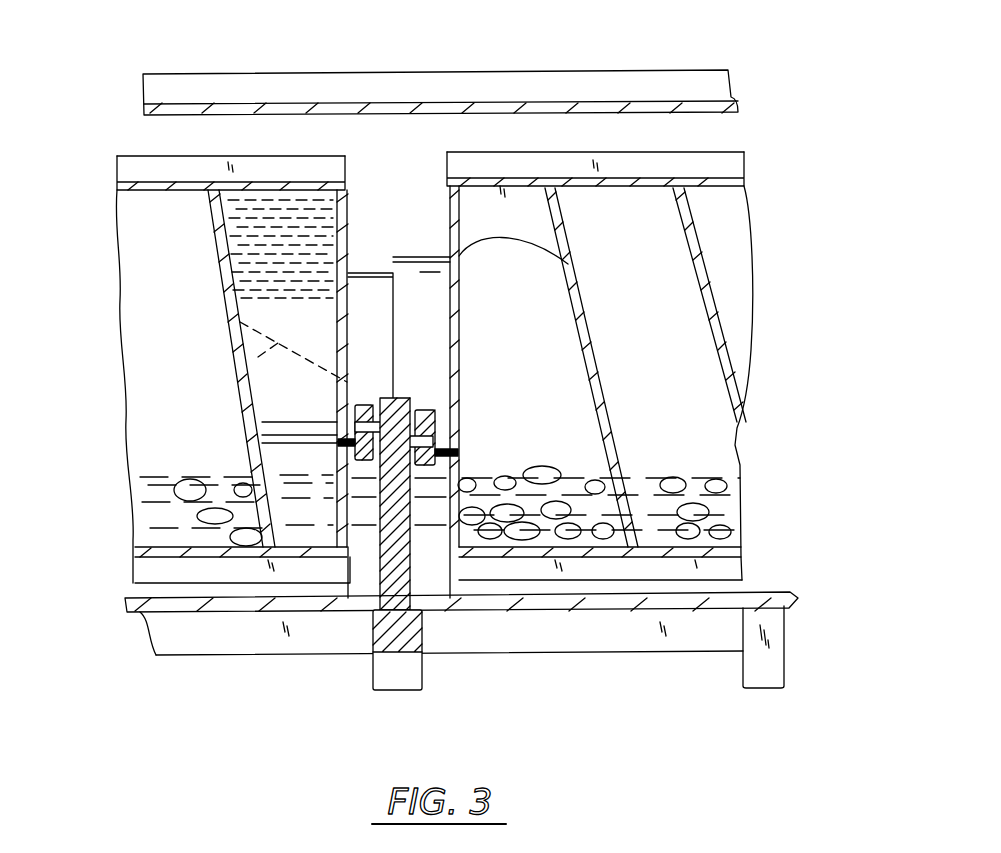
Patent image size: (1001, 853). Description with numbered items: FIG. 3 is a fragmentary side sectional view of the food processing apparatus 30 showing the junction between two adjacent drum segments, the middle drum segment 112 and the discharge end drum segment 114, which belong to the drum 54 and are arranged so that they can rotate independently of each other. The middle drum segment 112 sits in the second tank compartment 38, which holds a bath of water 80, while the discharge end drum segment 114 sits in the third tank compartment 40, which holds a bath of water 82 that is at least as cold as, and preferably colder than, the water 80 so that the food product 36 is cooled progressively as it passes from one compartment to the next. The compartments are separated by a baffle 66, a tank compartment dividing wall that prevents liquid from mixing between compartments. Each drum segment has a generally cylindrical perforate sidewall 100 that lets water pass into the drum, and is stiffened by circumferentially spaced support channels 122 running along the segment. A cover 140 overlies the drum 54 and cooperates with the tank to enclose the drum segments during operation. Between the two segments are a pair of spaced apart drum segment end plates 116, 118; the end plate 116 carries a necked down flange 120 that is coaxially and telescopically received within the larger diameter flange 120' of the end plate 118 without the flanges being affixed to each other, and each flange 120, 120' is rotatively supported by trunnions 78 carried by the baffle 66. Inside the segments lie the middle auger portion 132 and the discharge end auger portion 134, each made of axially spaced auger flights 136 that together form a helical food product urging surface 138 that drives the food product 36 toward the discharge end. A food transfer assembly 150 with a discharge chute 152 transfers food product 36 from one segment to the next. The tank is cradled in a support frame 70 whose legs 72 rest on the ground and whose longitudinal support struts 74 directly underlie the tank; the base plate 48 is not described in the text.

The food processing apparatus 30 is at (268, 20).
The cover 140 is at (634, 72).
The support channel 122 is at (152, 156).
The perforate sidewall 100 is at (117, 186).
The middle drum segment 112 is at (105, 226).
The discharge end drum segment 114 is at (778, 229).
The drum segment end plate 116 is at (348, 186).
The drum segment end plate 118 is at (450, 190).
The end plate flange 120 is at (375, 410).
The end plate flange 120' is at (409, 361).
The auger flight 136 is at (234, 300).
The helical food product urging surface 138 is at (568, 292).
The drum 54 is at (773, 270).
The discharge end auger portion 134 is at (775, 362).
The middle auger portion 132 is at (105, 351).
The discharge chute 152 is at (250, 357).
The food transfer assembly 150 is at (221, 382).
The trunnion 78 is at (423, 408).
The baffle 66 is at (380, 578).
The food product 36 is at (240, 486).
The bath of water 80 is at (145, 510).
The bath of water 82 is at (726, 502).
The base plate 48 is at (128, 600).
The second tank compartment 38 is at (196, 642).
The longitudinal support strut 74 is at (680, 652).
The leg 72 is at (403, 680).
The support frame 70 is at (796, 643).
The third tank compartment 40 is at (580, 677).